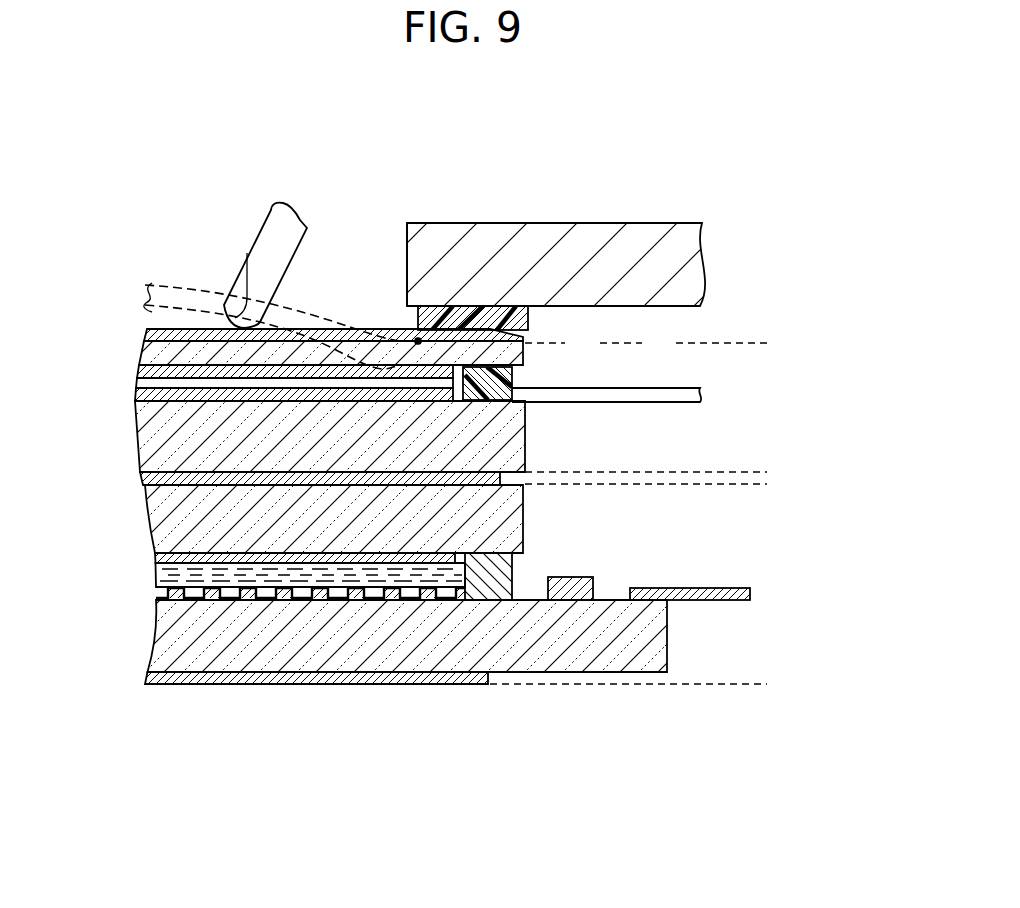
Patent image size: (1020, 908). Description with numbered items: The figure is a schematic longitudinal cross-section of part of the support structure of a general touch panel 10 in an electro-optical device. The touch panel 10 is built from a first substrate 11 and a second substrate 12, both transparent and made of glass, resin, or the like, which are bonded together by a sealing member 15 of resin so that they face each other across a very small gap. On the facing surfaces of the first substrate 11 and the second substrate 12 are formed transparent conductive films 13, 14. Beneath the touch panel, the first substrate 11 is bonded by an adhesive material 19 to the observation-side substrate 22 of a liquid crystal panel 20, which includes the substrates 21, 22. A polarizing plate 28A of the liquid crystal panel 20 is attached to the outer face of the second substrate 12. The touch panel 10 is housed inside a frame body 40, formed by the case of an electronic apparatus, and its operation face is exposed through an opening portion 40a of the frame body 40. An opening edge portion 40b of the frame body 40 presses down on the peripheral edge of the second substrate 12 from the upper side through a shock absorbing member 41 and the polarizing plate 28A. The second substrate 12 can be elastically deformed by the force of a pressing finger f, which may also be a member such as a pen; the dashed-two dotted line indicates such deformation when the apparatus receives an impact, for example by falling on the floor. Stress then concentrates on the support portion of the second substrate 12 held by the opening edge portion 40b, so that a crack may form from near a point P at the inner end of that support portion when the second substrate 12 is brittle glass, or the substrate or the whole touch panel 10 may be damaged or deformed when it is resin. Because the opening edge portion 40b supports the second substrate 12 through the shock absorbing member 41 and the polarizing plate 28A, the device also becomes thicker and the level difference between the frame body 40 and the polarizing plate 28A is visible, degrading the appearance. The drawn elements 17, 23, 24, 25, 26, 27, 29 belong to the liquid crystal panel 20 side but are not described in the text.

The touch panel 10 is at (767, 472).
The first substrate 11 is at (518, 430).
The second substrate 12 is at (142, 352).
The transparent conductive film 13 is at (137, 395).
The transparent conductive film 14 is at (138, 377).
The sealing member 15 is at (512, 378).
The flexible wiring board 17 is at (638, 395).
The adhesive material 19 is at (141, 478).
The liquid crystal panel 20 is at (767, 484).
The substrate 21 is at (550, 667).
The observation-side substrate 22 is at (515, 523).
The electrodes 23 is at (157, 592).
The insulating film 24 is at (156, 558).
The seal material 25 is at (500, 580).
The driver IC 26 is at (588, 588).
The wiring 27 is at (700, 602).
The polarizing plate 28A is at (165, 332).
The liquid crystal layer 29 is at (156, 575).
The frame body 40 is at (628, 224).
The opening portion 40a is at (406, 238).
The opening edge portion 40b is at (463, 222).
The shock absorbing member 41 is at (417, 319).
The point P is at (418, 341).
The finger f is at (275, 268).